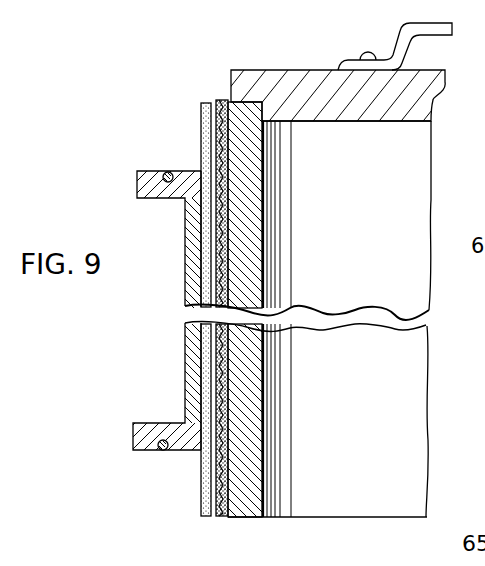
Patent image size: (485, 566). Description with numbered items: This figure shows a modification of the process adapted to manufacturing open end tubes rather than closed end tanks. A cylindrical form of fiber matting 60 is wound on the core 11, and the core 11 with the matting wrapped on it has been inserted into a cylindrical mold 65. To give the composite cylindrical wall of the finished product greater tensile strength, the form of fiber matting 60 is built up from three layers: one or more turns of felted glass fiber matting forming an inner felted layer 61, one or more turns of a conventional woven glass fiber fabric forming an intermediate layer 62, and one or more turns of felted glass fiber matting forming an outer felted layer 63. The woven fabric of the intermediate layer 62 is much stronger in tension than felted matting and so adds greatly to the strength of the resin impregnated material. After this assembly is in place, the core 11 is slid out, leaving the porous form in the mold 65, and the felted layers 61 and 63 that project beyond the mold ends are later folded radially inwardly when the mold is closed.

The core 11 is at (340, 183).
The cylindrical form of fiber matting 60 is at (207, 313).
The inner felted layer 61 is at (219, 518).
The intermediate layer 62 is at (213, 452).
The outer felted layer 63 is at (201, 481).
The cylindrical mold 65 is at (186, 360).